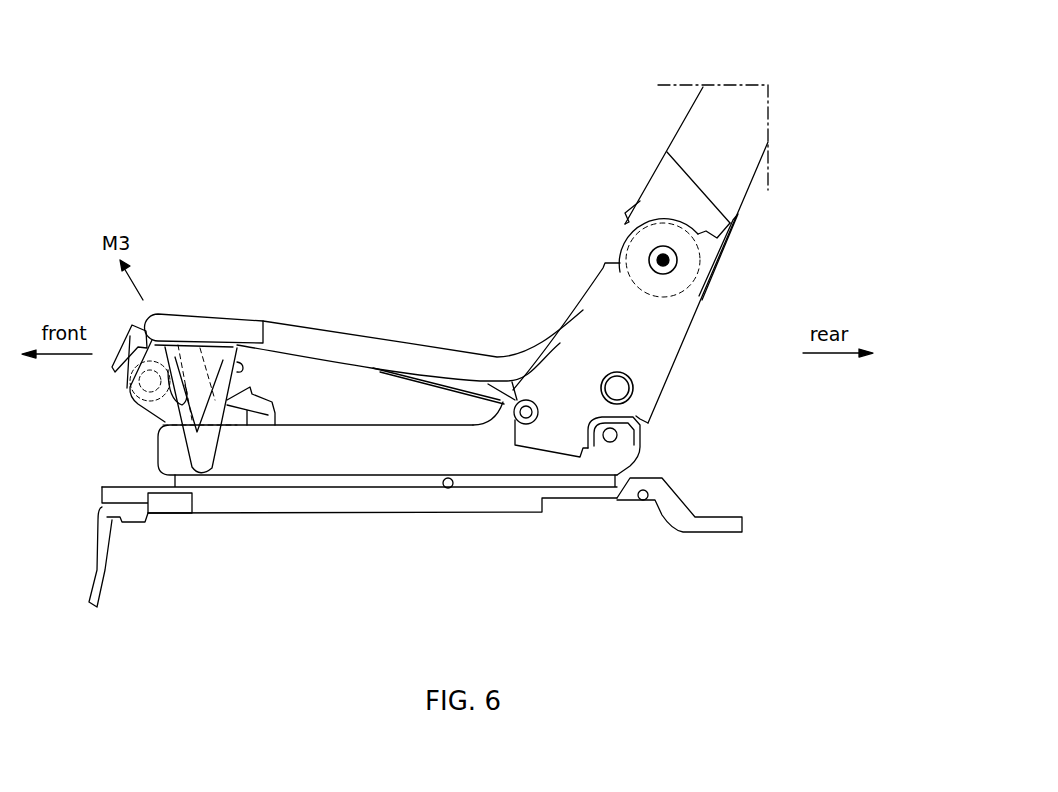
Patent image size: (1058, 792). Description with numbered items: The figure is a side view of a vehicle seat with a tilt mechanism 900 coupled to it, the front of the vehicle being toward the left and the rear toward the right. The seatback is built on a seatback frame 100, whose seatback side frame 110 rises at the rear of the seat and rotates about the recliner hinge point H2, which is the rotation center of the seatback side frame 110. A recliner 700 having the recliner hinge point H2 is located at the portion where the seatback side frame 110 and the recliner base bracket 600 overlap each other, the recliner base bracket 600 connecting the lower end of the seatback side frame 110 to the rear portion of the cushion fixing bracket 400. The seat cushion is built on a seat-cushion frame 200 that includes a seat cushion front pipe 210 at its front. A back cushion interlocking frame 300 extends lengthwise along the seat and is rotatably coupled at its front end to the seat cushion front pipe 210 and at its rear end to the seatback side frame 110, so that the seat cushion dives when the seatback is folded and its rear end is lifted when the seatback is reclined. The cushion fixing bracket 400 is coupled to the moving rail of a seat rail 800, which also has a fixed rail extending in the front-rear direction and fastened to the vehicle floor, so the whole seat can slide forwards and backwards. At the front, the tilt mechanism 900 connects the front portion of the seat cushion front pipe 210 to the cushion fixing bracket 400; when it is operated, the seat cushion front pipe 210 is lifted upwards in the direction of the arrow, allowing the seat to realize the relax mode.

The seatback frame 100 is at (775, 126).
The seatback side frame 110 is at (728, 107).
The seat-cushion frame 200 is at (214, 275).
The seat cushion front pipe 210 is at (205, 330).
The back cushion interlocking frame 300 is at (493, 372).
The cushion fixing bracket 400 is at (293, 450).
The recliner base bracket 600 is at (655, 368).
The recliner 700 is at (604, 208).
The seat rail 800 is at (435, 500).
The tilt mechanism 900 is at (163, 357).
The recliner hinge point H2 is at (662, 253).